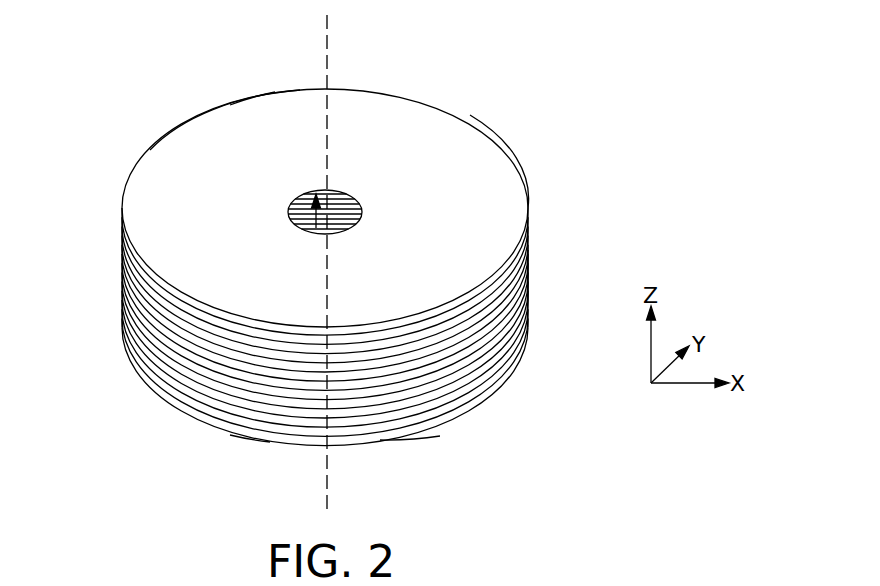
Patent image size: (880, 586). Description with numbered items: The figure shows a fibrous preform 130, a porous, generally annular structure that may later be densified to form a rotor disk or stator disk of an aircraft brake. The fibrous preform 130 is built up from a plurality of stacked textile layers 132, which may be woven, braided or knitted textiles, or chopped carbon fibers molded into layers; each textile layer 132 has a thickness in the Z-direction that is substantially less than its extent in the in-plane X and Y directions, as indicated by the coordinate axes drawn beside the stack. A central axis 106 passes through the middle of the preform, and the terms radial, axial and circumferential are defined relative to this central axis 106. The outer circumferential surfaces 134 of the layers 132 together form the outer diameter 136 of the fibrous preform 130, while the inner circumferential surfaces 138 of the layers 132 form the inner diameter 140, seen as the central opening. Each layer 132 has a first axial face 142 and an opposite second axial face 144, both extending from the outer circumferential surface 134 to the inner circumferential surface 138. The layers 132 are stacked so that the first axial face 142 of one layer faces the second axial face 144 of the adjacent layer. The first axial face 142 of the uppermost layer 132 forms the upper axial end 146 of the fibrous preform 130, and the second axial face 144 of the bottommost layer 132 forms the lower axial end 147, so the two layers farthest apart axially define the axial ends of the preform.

The central axis 106 is at (328, 30).
The fibrous preform 130 is at (560, 76).
The textile layers 132 is at (402, 98).
The outer circumferential surface 134 is at (188, 121).
The outer diameter 136 is at (526, 166).
The inner circumferential surface 138 is at (355, 201).
The inner diameter 140 is at (316, 228).
The first axial face 142 is at (325, 208).
The second axial face 144 is at (530, 271).
The upper axial end 146 is at (250, 95).
The lower axial end 147 is at (250, 452).